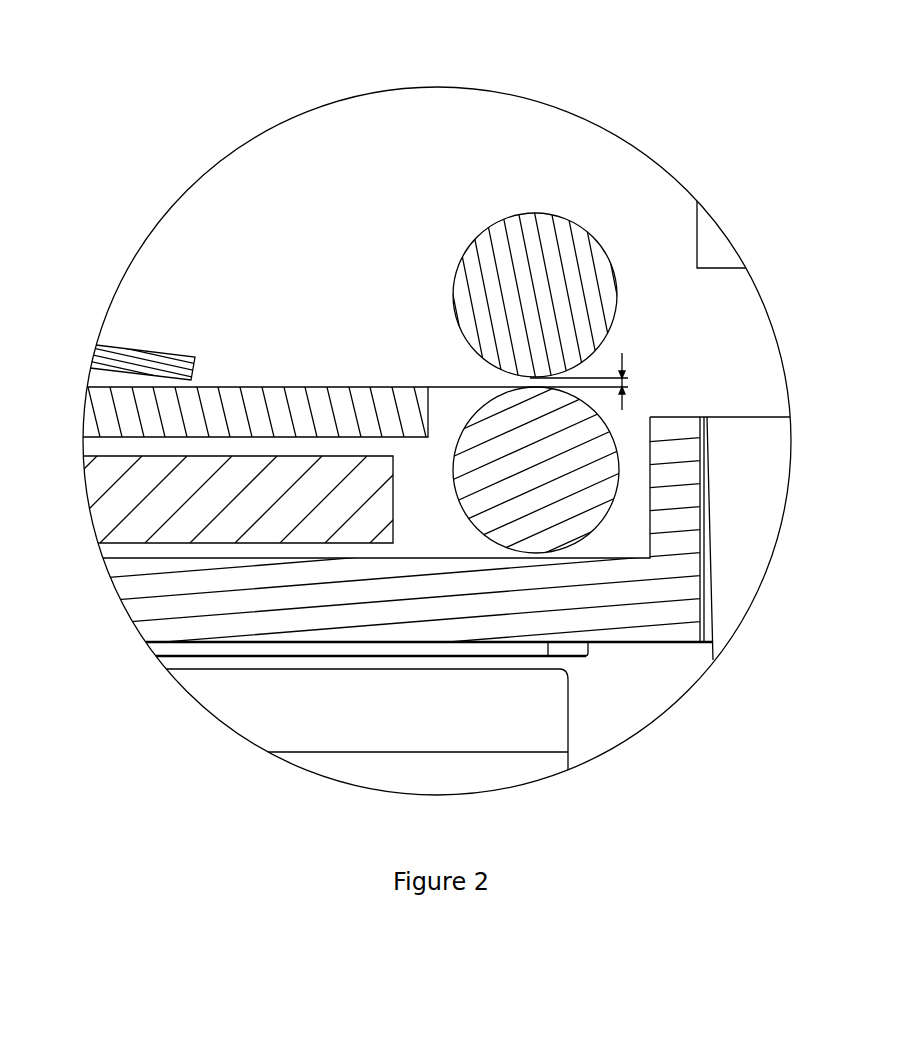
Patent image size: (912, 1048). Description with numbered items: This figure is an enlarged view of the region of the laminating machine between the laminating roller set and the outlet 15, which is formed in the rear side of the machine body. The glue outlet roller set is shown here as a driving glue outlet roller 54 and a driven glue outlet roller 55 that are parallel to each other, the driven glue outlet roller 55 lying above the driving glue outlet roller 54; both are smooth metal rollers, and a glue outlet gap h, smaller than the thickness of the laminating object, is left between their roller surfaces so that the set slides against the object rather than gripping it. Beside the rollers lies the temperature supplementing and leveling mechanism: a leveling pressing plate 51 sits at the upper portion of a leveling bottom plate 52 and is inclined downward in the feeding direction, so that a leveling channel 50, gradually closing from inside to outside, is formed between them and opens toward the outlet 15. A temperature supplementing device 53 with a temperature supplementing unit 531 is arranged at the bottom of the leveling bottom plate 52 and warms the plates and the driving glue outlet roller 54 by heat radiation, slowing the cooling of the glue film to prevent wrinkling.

The outlet 15 is at (745, 333).
The leveling channel 50 is at (365, 511).
The leveling pressing plate 51 is at (133, 353).
The leveling bottom plate 52 is at (270, 403).
The temperature supplementing unit 531 is at (123, 500).
The temperature supplementing device 53 is at (173, 605).
The driving glue outlet roller 54 is at (585, 490).
The driven glue outlet roller 55 is at (567, 250).